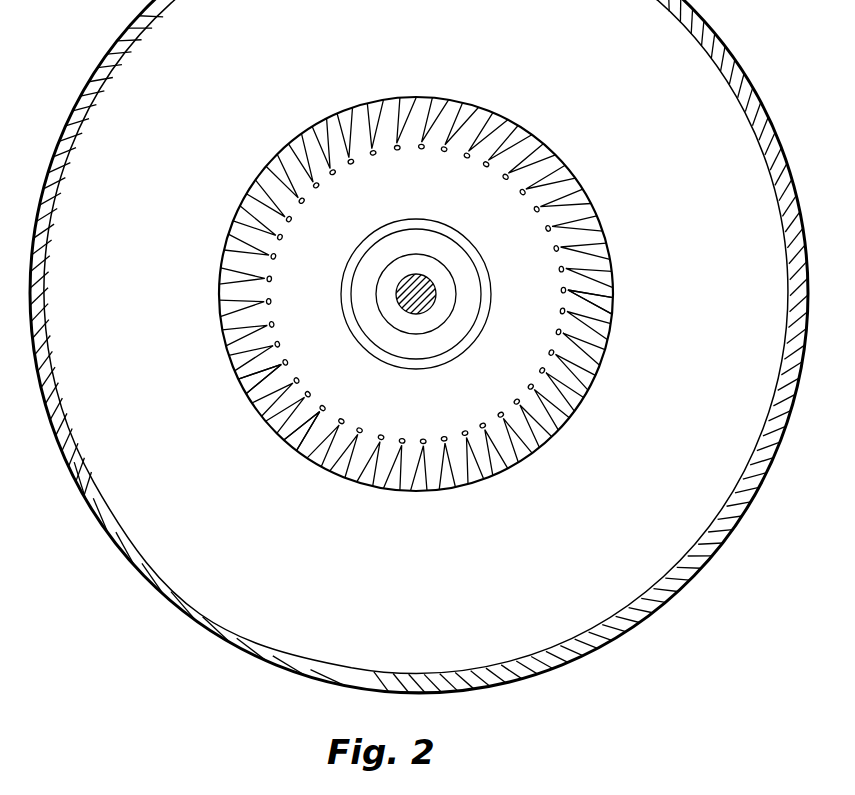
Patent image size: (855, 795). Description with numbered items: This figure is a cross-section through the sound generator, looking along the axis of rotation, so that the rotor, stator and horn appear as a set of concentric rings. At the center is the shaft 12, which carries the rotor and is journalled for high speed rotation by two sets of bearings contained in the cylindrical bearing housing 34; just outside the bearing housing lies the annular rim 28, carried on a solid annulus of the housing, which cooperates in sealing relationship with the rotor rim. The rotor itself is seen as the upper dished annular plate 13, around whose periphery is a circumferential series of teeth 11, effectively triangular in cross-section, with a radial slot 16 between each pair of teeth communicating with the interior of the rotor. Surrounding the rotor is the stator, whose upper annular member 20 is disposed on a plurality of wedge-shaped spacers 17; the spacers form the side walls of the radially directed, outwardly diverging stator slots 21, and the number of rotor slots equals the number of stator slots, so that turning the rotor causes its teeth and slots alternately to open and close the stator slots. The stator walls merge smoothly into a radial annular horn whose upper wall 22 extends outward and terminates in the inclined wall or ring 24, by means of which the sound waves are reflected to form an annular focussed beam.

The teeth 11 is at (441, 308).
The shaft 12 is at (404, 292).
The second dished annular plate 13 is at (532, 325).
The radial slot 16 is at (283, 362).
The wedge-shaped spacers 17 is at (584, 297).
The upper annular member 20 is at (501, 456).
The stator slots 21 is at (305, 438).
The upper wall 22 is at (416, 336).
The inclined wall or ring 24 is at (740, 535).
The annular rim 28 is at (436, 357).
The cylindrical bearing housing 34 is at (428, 319).